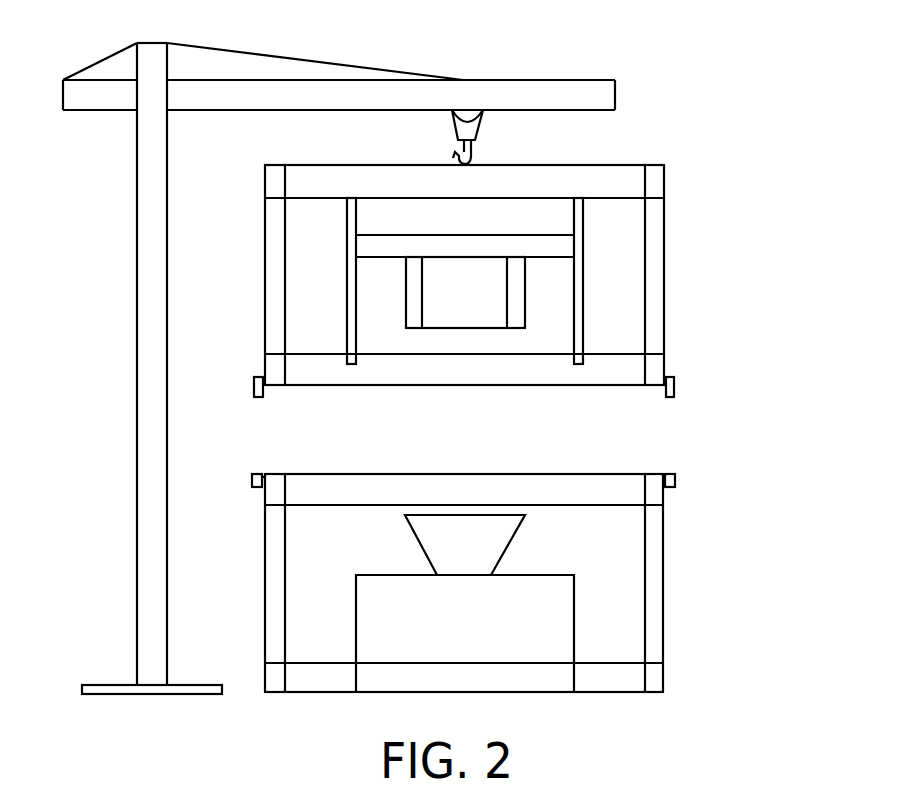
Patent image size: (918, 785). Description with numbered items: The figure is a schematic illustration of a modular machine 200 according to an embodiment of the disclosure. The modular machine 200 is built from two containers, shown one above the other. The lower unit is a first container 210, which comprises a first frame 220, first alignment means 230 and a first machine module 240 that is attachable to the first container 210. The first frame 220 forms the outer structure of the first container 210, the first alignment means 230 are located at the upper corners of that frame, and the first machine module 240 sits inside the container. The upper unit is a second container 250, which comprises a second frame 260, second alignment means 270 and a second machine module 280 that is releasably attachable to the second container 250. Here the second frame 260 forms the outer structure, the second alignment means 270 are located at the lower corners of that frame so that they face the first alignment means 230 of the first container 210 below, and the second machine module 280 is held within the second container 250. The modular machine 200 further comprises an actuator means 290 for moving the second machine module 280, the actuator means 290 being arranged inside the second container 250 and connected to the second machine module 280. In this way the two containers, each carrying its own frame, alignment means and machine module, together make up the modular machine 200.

The modular machine 200 is at (531, 441).
The first container 210 is at (628, 529).
The first frame 220 is at (663, 585).
The first alignment means 230 is at (675, 479).
The first machine module 240 is at (574, 628).
The second container 250 is at (626, 205).
The second frame 260 is at (664, 280).
The second alignment means 270 is at (674, 385).
The second machine module 280 is at (525, 317).
The actuator means 290 is at (583, 244).